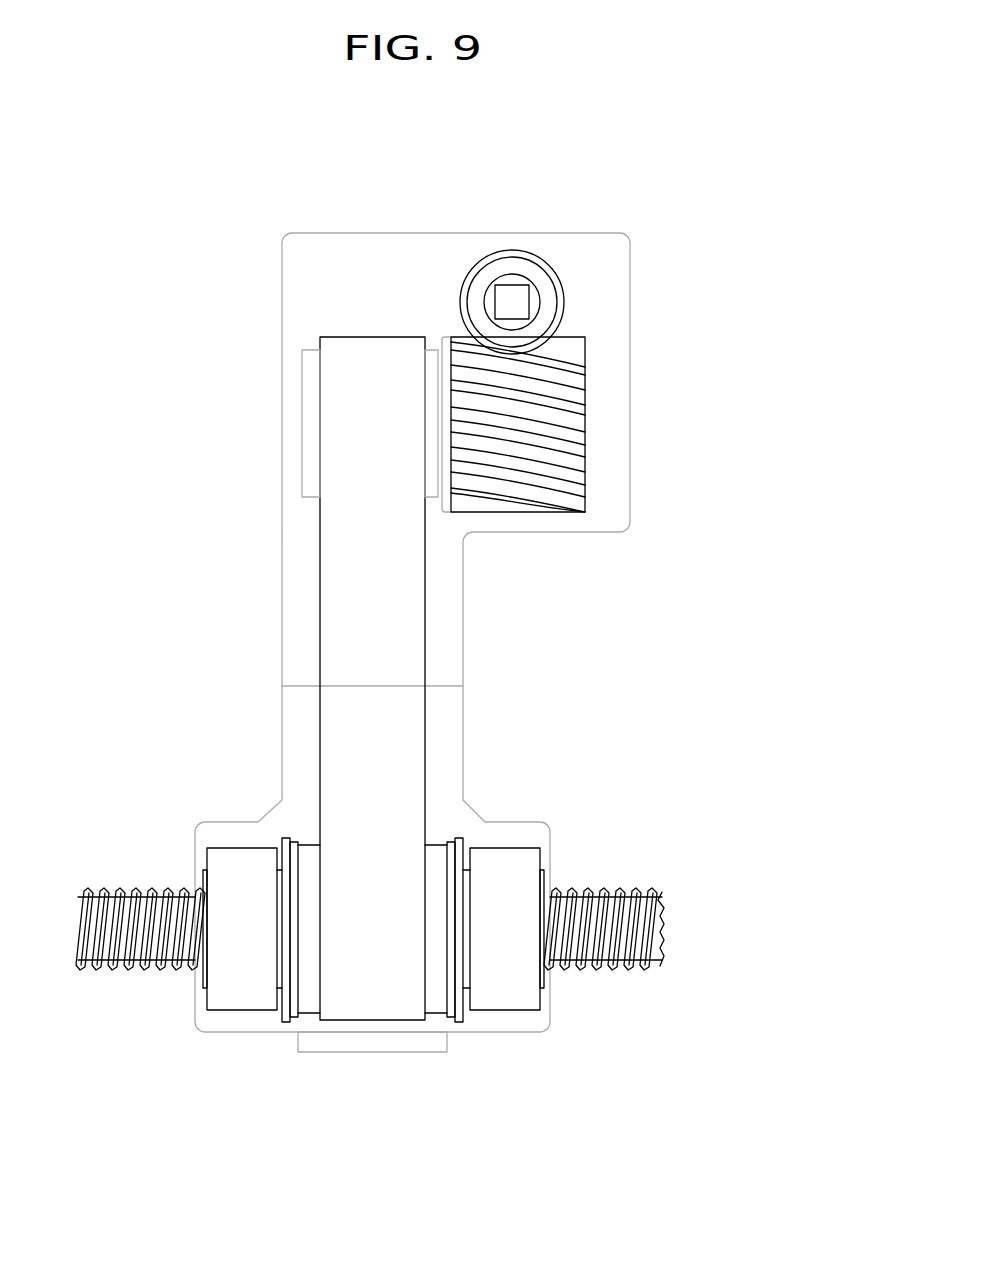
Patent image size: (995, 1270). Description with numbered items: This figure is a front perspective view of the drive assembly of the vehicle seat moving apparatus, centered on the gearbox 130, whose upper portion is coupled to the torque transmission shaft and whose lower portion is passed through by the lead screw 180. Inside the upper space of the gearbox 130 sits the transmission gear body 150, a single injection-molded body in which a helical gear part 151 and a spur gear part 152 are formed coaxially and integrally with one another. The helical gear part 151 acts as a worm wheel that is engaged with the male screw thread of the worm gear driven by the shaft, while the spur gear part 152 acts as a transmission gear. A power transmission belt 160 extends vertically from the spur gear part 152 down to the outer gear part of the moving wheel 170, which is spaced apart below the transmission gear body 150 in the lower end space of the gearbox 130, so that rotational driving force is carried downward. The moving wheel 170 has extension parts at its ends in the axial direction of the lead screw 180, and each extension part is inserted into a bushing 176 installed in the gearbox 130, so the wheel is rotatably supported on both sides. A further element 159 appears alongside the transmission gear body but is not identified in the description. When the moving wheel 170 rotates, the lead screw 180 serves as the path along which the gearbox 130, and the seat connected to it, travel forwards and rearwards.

The gearbox 130 is at (574, 205).
The transmission gear body 150 is at (598, 427).
The helical gear part 151 is at (520, 487).
The spur gear part 152 is at (313, 418).
The spacer 159 is at (447, 345).
The power transmission belt 160 is at (340, 618).
The moving wheel 170 is at (435, 1007).
The bushing 176 is at (240, 992).
The lead screw 180 is at (615, 888).